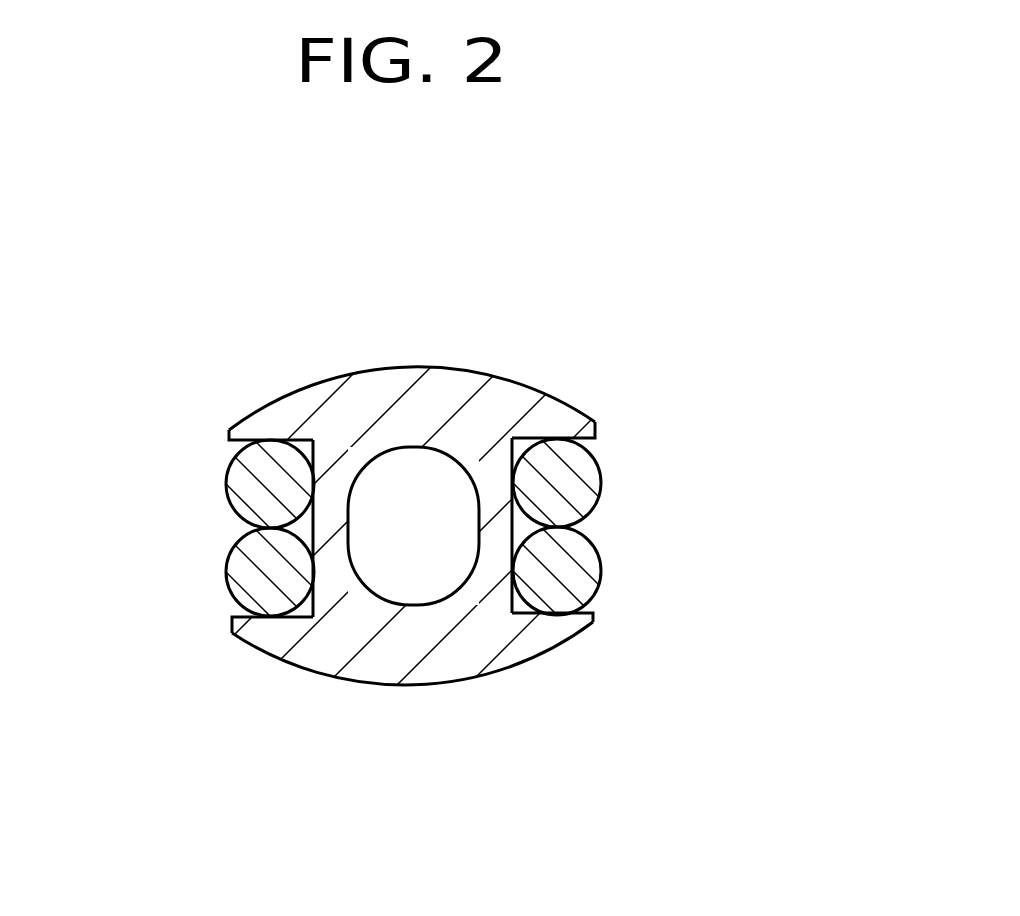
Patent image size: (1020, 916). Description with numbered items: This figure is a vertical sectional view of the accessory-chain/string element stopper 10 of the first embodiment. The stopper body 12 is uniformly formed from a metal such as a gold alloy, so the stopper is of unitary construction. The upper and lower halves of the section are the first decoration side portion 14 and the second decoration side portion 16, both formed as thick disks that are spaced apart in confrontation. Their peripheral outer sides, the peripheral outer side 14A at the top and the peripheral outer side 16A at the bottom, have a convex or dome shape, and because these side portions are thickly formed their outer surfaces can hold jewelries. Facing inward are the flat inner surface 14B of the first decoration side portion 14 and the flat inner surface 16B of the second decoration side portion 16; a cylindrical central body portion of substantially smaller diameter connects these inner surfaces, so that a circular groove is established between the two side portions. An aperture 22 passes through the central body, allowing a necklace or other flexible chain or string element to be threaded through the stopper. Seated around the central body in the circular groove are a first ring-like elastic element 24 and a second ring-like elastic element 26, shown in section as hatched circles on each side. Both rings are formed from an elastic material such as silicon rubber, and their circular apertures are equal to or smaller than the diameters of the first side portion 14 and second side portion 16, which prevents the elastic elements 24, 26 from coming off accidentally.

The accessory-chain/string element stopper 10 is at (673, 300).
The stopper body 12 is at (547, 365).
The first decoration side portion 14 is at (572, 408).
The peripheral outer side 14A is at (440, 367).
The flat inner surface 14B is at (230, 444).
The second decoration side portion 16 is at (550, 655).
The peripheral outer side 16A is at (465, 682).
The flat inner surface 16B is at (588, 612).
The aperture 22 is at (420, 570).
The first ring-like elastic element 24 is at (602, 472).
The second ring-like elastic element 26 is at (603, 565).